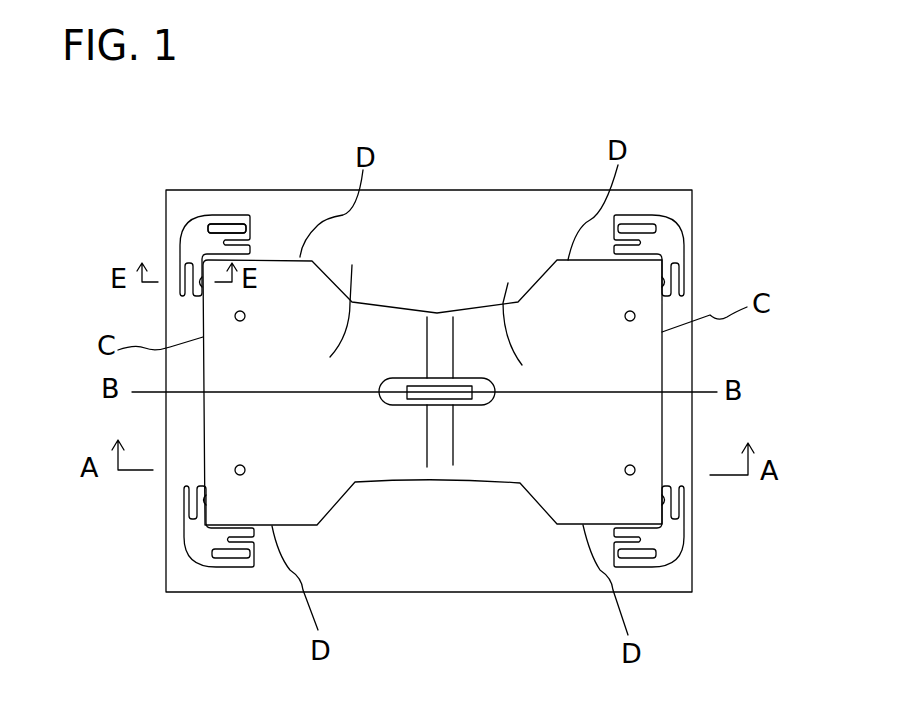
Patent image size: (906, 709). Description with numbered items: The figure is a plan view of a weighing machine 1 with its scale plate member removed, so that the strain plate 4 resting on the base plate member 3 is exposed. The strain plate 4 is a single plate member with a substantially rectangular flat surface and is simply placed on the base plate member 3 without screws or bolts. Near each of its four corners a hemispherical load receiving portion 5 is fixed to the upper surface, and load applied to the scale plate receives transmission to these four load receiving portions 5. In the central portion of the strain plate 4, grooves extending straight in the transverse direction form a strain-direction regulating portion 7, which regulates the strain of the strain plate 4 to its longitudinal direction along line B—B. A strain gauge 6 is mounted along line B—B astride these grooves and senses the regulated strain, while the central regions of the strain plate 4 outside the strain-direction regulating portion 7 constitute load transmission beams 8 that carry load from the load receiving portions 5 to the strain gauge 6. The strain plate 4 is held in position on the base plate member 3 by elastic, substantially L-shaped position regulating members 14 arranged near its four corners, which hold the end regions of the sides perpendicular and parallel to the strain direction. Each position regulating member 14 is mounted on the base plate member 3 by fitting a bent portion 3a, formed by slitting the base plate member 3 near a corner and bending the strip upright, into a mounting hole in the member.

The weighing machine 1 is at (407, 182).
The base plate member 3 is at (633, 203).
The bent portion 3a is at (234, 235).
The strain plate 4 is at (385, 305).
The load receiving portions 5 is at (246, 318).
The strain gauge 6 is at (410, 405).
The strain-direction regulating portion 7 is at (447, 447).
The load transmission beams 8 is at (426, 298).
The position regulating members 14 is at (193, 232).